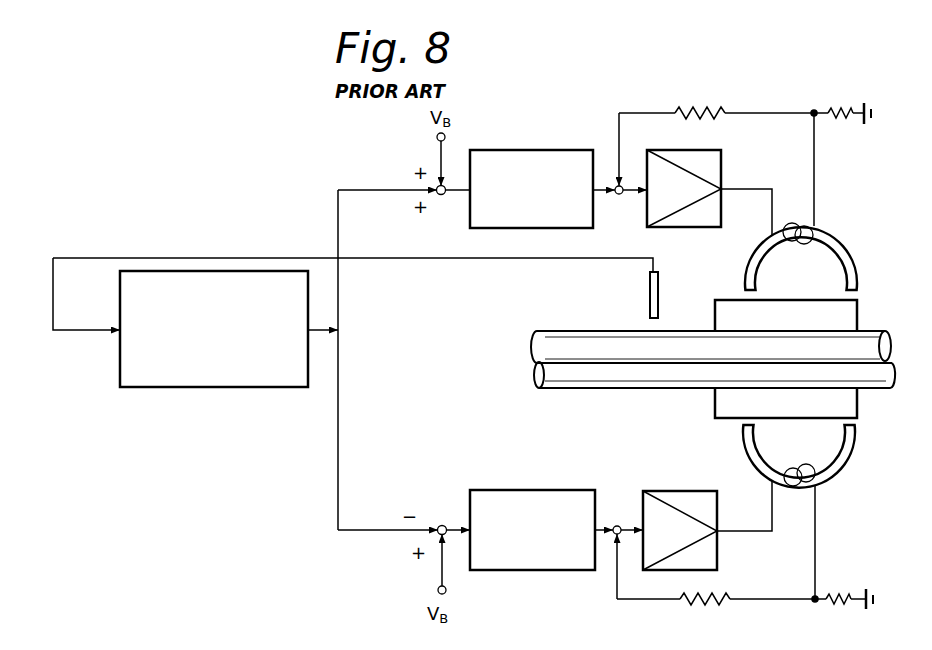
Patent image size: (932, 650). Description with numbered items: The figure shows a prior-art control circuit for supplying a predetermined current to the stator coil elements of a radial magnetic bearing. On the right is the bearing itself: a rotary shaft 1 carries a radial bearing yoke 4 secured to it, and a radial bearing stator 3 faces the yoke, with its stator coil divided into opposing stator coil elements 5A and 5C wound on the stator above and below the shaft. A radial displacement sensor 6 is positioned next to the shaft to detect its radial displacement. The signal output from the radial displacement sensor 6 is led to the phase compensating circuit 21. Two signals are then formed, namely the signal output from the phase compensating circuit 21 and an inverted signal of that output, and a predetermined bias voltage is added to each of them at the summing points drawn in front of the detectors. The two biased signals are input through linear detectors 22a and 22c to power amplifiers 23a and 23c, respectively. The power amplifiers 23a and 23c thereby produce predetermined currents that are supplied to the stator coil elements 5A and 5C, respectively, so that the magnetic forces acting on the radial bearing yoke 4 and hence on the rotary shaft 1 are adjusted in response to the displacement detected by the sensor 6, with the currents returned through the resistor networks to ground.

The rotary shaft 1 is at (893, 346).
The radial bearing stator 3 is at (856, 272).
The radial bearing yoke 4 is at (858, 312).
The stator coil element 5A is at (817, 215).
The stator coil element 5C is at (802, 468).
The radial displacement sensor 6 is at (658, 288).
The phase compensating circuit 21 is at (243, 387).
The linear detector 22a is at (537, 150).
The linear detector 22c is at (512, 570).
The power amplifier 23a is at (723, 160).
The power amplifier 23c is at (662, 491).